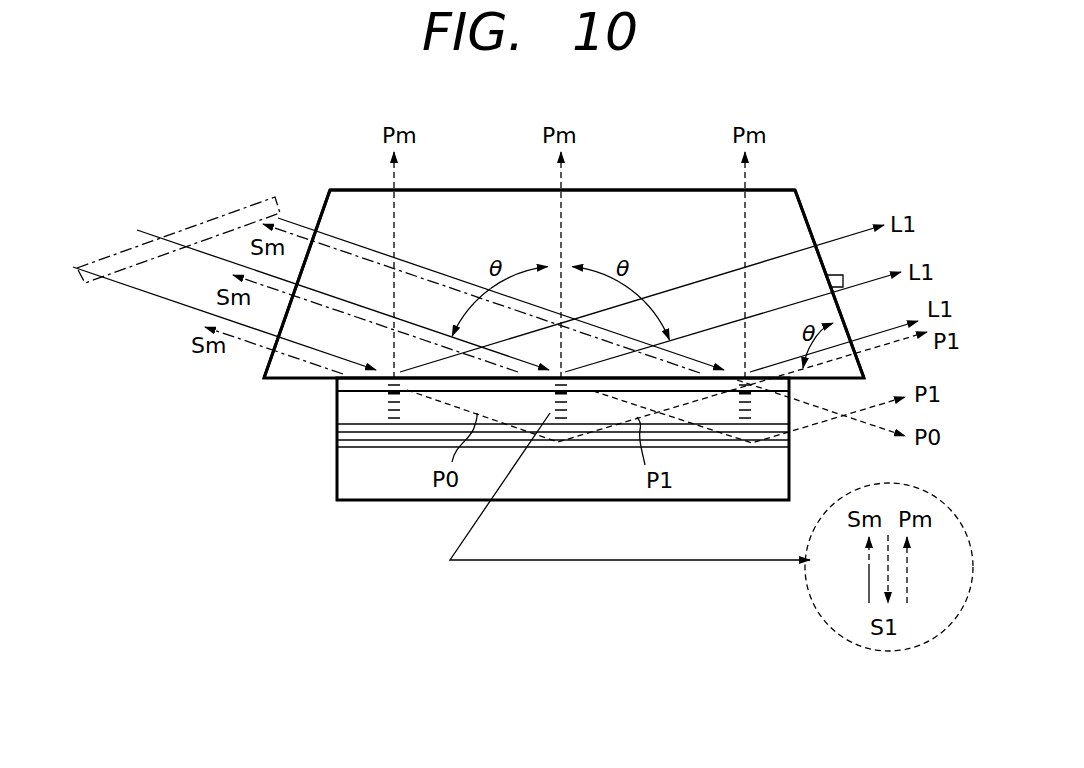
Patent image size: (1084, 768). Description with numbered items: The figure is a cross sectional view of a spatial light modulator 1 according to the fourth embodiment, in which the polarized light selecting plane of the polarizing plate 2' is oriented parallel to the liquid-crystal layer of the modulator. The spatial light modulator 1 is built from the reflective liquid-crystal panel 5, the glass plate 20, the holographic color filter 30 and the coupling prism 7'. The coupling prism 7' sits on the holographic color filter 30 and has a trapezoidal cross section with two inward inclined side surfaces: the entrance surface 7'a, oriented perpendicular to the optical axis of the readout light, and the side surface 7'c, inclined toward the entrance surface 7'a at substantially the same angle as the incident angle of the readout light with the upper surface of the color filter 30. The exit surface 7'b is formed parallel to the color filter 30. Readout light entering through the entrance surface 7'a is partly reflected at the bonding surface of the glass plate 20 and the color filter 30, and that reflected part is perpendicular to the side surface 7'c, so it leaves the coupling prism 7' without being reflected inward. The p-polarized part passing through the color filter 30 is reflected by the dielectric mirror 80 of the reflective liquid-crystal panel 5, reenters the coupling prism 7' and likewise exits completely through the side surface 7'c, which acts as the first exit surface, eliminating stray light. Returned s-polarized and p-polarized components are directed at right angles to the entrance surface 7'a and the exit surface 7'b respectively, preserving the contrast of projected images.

The spatial light modulator 1 is at (328, 131).
The polarizing plate 2' is at (178, 222).
The coupling prism 7' is at (566, 256).
The entrance surface 7'a is at (297, 261).
The exit surface 7'b is at (562, 167).
The side surface 7'c is at (832, 277).
The glass plate 20 is at (347, 407).
The holographic color filter 30 is at (337, 381).
The reflective liquid-crystal panel 5 is at (330, 425).
The dielectric mirror 80 is at (790, 447).